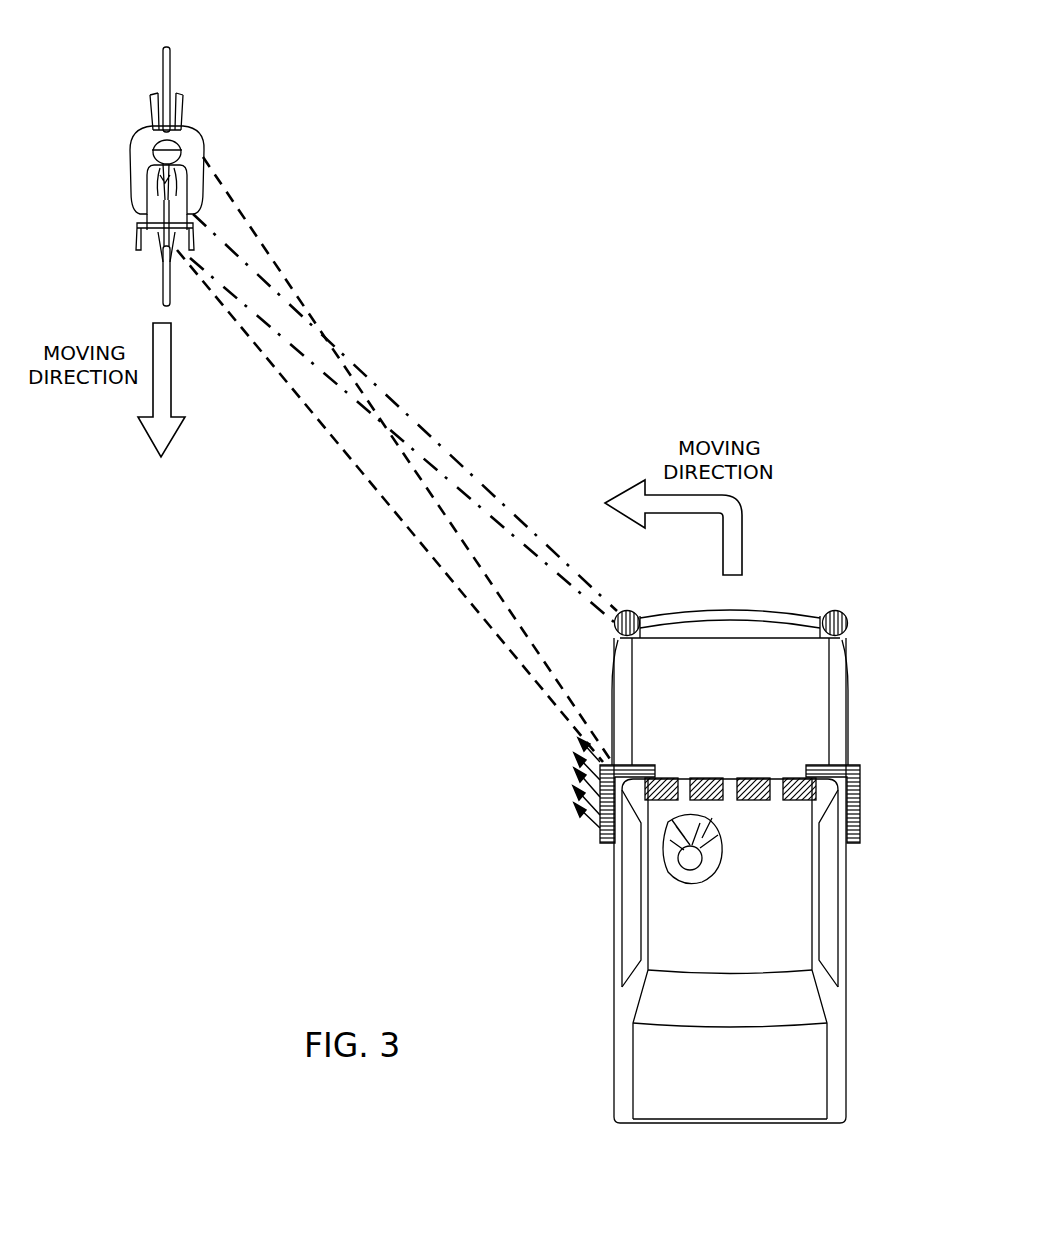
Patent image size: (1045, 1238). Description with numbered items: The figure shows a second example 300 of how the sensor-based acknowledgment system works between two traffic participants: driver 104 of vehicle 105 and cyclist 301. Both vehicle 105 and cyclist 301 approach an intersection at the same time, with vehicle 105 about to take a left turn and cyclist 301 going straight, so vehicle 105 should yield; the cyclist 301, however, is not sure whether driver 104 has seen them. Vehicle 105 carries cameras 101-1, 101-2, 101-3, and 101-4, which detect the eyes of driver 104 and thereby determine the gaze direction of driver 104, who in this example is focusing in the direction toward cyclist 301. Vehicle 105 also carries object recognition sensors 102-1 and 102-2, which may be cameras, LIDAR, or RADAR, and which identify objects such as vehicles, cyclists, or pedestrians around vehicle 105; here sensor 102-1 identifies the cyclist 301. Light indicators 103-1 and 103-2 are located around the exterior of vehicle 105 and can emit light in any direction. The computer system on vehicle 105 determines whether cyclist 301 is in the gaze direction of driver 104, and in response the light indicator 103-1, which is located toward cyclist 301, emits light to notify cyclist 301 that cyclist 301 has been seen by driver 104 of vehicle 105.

The second example 300 is at (677, 110).
The cyclist 301 is at (138, 135).
The camera 101-1 is at (668, 777).
The camera 101-2 is at (710, 777).
The camera 101-3 is at (758, 777).
The camera 101-4 is at (793, 801).
The sensor 102-1 is at (634, 610).
The sensor 102-2 is at (836, 609).
The light indicator 103-1 is at (599, 843).
The light indicator 103-2 is at (862, 798).
The driver 104 is at (718, 870).
The vehicle 105 is at (752, 957).